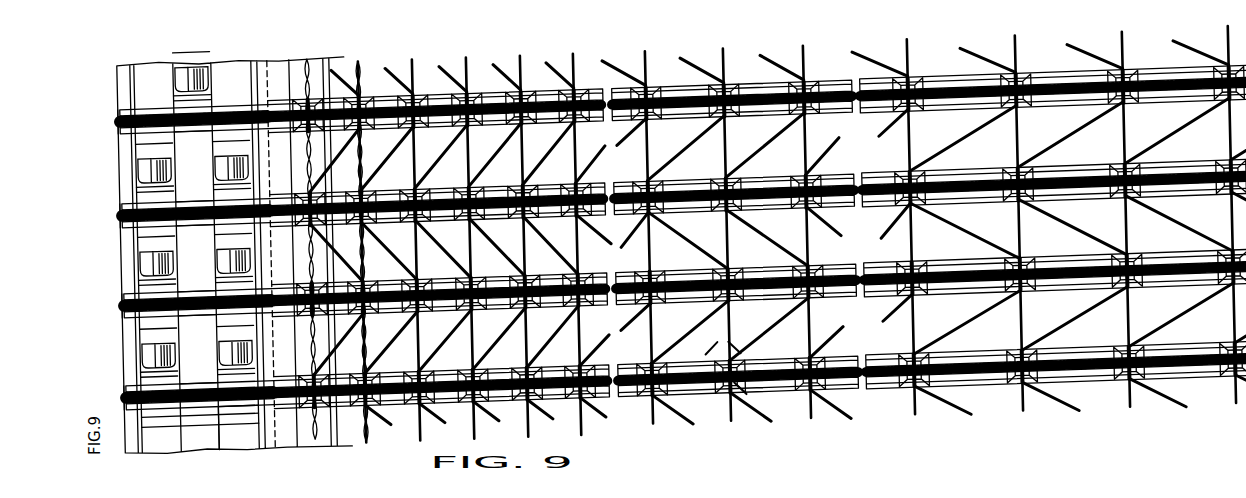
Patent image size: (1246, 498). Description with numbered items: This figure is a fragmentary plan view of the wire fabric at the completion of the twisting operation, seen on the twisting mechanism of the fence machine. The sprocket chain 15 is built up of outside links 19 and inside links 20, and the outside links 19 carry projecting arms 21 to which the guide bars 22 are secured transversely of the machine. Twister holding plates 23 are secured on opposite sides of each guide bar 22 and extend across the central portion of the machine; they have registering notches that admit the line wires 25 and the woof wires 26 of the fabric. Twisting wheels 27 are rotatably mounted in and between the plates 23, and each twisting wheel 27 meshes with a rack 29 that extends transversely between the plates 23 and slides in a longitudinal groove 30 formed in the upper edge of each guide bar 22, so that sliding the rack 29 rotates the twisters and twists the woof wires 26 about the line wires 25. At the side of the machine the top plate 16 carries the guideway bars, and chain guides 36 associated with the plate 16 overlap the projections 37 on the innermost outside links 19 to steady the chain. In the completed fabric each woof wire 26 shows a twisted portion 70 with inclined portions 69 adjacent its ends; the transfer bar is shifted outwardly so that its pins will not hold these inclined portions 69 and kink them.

The sprocket chain 15 is at (118, 66).
The top plate 16 is at (350, 445).
The outside links 19 is at (195, 258).
The inside links 20 is at (194, 166).
The projecting arms 21 is at (197, 304).
The guide bars 22 is at (137, 225).
The twister holding plates 23 is at (487, 90).
The line wires 25 is at (525, 337).
The woof wires 26 is at (506, 330).
The twisting wheels 27 is at (541, 188).
The rack 29 is at (122, 212).
The longitudinal groove 30 is at (144, 110).
The chain guides 36 is at (285, 448).
The projections 37 is at (255, 425).
The inclined portions 69 is at (743, 350).
The twisted portion 70 is at (718, 350).